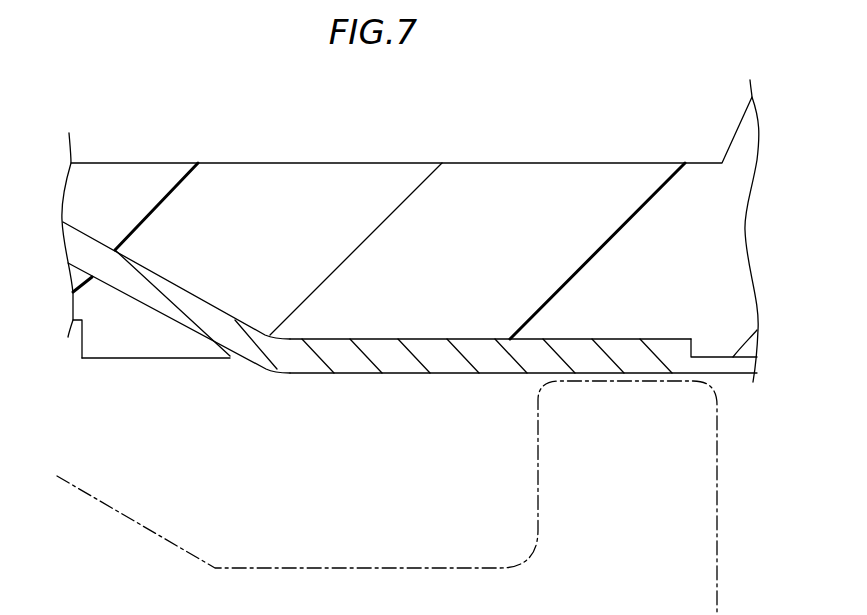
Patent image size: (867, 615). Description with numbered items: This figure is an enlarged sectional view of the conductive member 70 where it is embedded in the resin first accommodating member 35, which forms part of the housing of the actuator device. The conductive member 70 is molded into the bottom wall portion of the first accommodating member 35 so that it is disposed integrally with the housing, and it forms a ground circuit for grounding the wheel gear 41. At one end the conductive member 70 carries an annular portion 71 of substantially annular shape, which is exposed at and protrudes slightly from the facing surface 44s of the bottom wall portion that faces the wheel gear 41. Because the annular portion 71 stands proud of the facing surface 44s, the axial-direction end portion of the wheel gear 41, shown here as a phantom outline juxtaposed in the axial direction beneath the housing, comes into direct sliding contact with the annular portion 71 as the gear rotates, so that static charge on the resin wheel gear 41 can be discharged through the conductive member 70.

The first accommodating member 35 is at (330, 162).
The facing surface 44s is at (158, 360).
The conductive member 70 is at (207, 300).
The annular portion 71 is at (358, 374).
The wheel gear 41 is at (537, 413).